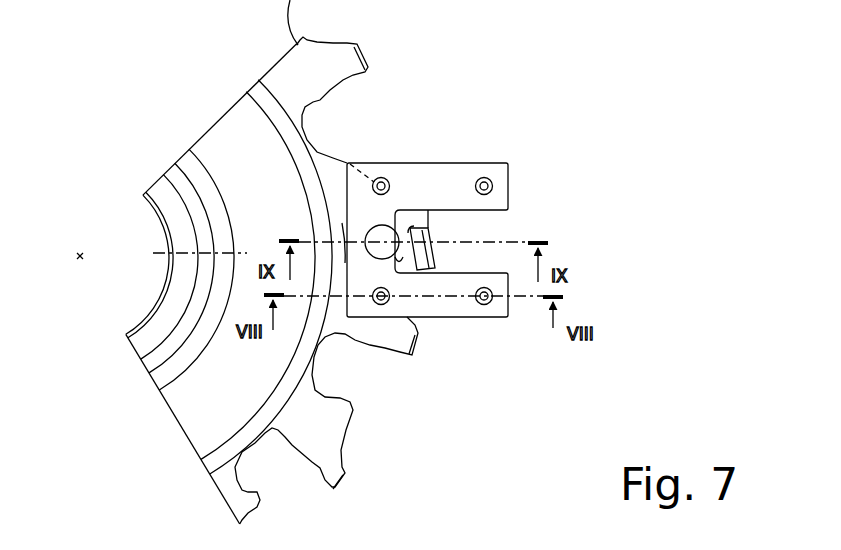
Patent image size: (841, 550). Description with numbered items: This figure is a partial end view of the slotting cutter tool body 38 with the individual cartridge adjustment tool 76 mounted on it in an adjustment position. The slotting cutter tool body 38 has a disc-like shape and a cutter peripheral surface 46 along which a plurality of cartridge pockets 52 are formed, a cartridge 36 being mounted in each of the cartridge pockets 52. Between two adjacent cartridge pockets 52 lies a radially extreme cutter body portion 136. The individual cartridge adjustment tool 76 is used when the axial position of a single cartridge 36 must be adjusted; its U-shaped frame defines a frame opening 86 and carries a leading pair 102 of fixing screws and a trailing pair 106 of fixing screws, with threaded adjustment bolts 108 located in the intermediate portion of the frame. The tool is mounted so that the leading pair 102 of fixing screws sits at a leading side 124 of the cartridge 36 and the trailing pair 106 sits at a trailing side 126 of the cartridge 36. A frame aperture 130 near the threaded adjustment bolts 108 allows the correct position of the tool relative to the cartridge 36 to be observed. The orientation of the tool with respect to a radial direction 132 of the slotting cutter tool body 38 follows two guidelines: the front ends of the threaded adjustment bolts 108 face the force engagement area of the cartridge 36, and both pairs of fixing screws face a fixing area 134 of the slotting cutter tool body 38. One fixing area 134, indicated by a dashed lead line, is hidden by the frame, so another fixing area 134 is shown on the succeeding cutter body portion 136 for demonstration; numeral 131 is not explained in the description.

The cartridge 36 is at (421, 220).
The slotting cutter tool body 38 is at (213, 395).
The cutter peripheral surface 46 is at (332, 32).
The cartridge pocket 52 is at (378, 98).
The individual cartridge adjustment tool 76 is at (505, 140).
The frame opening 86 is at (127, 8).
The leading pair of fixing screws 102 is at (381, 308).
The trailing pair of fixing screws 106 is at (382, 178).
The threaded adjustment bolt 108 is at (360, 228).
The leading side of the cartridge 124 is at (490, 333).
The trailing side of the cartridge 126 is at (452, 153).
The frame aperture 130 is at (507, 233).
The tooth edge 131 is at (293, 22).
The radial direction 132 is at (130, 256).
The fixing area 134 is at (349, 160).
The cutter body portion 136 is at (340, 66).